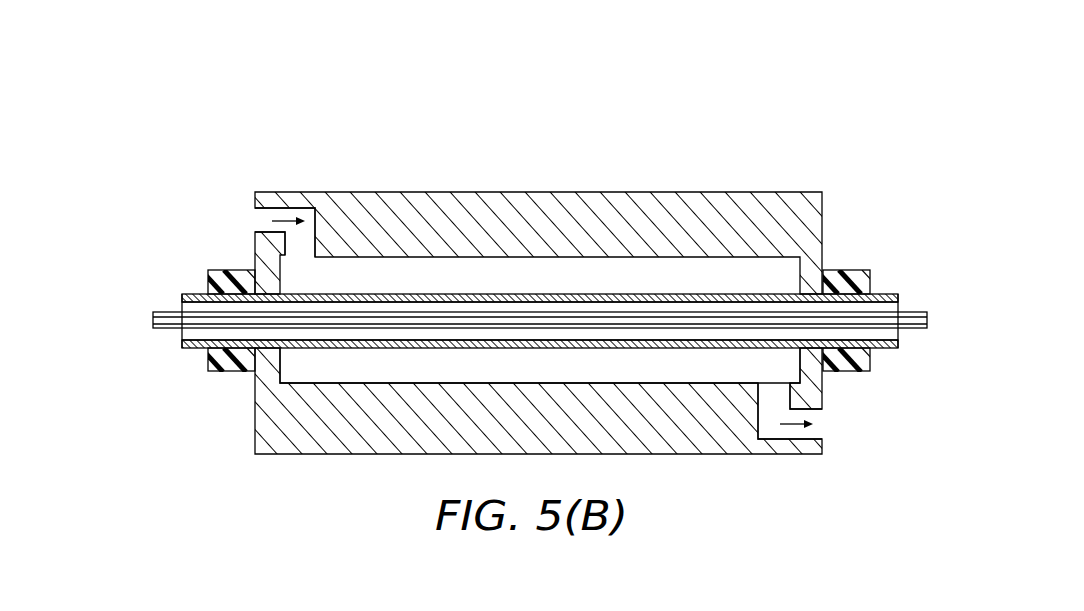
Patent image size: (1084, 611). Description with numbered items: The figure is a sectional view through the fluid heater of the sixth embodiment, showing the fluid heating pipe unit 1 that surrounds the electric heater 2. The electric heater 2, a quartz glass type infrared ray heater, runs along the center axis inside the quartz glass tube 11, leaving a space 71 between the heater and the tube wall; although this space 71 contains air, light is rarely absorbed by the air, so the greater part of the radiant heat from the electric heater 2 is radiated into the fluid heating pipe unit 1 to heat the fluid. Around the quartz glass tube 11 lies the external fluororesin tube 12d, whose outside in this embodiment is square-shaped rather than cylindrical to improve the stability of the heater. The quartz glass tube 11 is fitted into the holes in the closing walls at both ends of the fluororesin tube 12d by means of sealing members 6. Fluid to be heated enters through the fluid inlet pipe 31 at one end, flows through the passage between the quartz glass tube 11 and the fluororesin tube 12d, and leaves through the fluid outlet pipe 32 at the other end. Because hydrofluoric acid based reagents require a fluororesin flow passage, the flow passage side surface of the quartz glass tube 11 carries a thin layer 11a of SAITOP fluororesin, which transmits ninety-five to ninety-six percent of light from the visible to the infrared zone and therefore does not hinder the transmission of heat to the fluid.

The fluid heating pipe unit 1 is at (555, 290).
The electric heater 2 is at (166, 330).
The sealing members 6 is at (866, 246).
The quartz glass tube 11 is at (495, 292).
The layer of SAITOP fluororesin 11a is at (492, 350).
The external fluororesin tube 12d is at (587, 192).
The fluid inlet pipe 31 is at (255, 219).
The fluid outlet pipe 32 is at (822, 428).
The space 71 is at (182, 305).